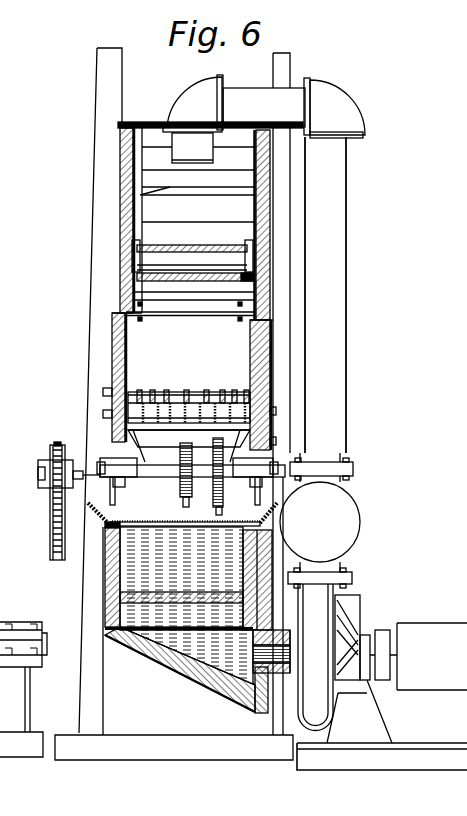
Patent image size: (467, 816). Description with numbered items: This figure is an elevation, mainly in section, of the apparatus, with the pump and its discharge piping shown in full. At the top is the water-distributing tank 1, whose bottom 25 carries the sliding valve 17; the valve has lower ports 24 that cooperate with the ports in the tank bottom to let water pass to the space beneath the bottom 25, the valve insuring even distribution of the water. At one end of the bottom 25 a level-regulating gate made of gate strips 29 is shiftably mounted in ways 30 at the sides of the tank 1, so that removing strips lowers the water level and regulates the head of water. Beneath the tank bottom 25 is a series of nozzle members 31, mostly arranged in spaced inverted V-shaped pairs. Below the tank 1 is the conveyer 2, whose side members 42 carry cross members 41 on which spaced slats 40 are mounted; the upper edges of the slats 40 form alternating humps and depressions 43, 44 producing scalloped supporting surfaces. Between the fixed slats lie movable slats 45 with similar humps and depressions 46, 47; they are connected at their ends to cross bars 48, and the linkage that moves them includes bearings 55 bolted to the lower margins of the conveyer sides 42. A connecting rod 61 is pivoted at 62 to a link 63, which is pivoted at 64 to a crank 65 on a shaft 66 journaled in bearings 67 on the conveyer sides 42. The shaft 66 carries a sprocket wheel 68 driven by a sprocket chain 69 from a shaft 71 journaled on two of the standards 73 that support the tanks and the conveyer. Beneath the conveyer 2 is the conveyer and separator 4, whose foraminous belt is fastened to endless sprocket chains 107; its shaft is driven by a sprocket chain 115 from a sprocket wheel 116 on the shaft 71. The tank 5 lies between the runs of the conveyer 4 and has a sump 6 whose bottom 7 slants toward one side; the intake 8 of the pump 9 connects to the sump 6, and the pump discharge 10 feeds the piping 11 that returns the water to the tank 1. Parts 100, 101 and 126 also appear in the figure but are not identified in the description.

The water-distributing tank 1 is at (143, 119).
The conveyer 2 is at (177, 367).
The conveyer and separator 4 is at (172, 522).
The tank 5 is at (110, 565).
The sump 6 is at (196, 689).
The bottom 7 is at (165, 670).
The intake 8 is at (235, 698).
The pump 9 is at (346, 614).
The discharge 10 is at (345, 539).
The piping 11 is at (333, 266).
The sliding valve 17 is at (137, 247).
The lower ports 24 is at (253, 279).
The bottom 25 is at (128, 276).
The gate strips 29 is at (173, 208).
The ways 30 is at (137, 169).
The nozzle members 31 is at (125, 315).
The slats 40 is at (172, 425).
The cross members 41 is at (213, 425).
The side members 42 is at (112, 343).
The humps 43 is at (171, 385).
The depressions 44 is at (225, 381).
The movable slats 45 is at (145, 390).
The humps 46 is at (230, 391).
The depressions 47 is at (187, 391).
The cross bars 48 is at (205, 390).
The bearings 55 is at (105, 395).
The connecting rod 61 is at (118, 487).
The pivot 62 is at (123, 487).
The link 63 is at (101, 475).
The pivot 64 is at (98, 462).
The crank 65 is at (308, 446).
The shaft 66 is at (153, 470).
The bearings 67 is at (110, 425).
The sprocket wheel 68 is at (221, 500).
The sprocket chain 69 is at (213, 490).
The shaft 71 is at (40, 465).
The standards 73 is at (98, 71).
The gear wheel 100 is at (179, 491).
The hub 101 is at (181, 498).
The endless sprocket chains 107 is at (106, 527).
The sprocket chain 115 is at (53, 517).
The sprocket wheel 116 is at (57, 443).
The plate 126 is at (120, 598).